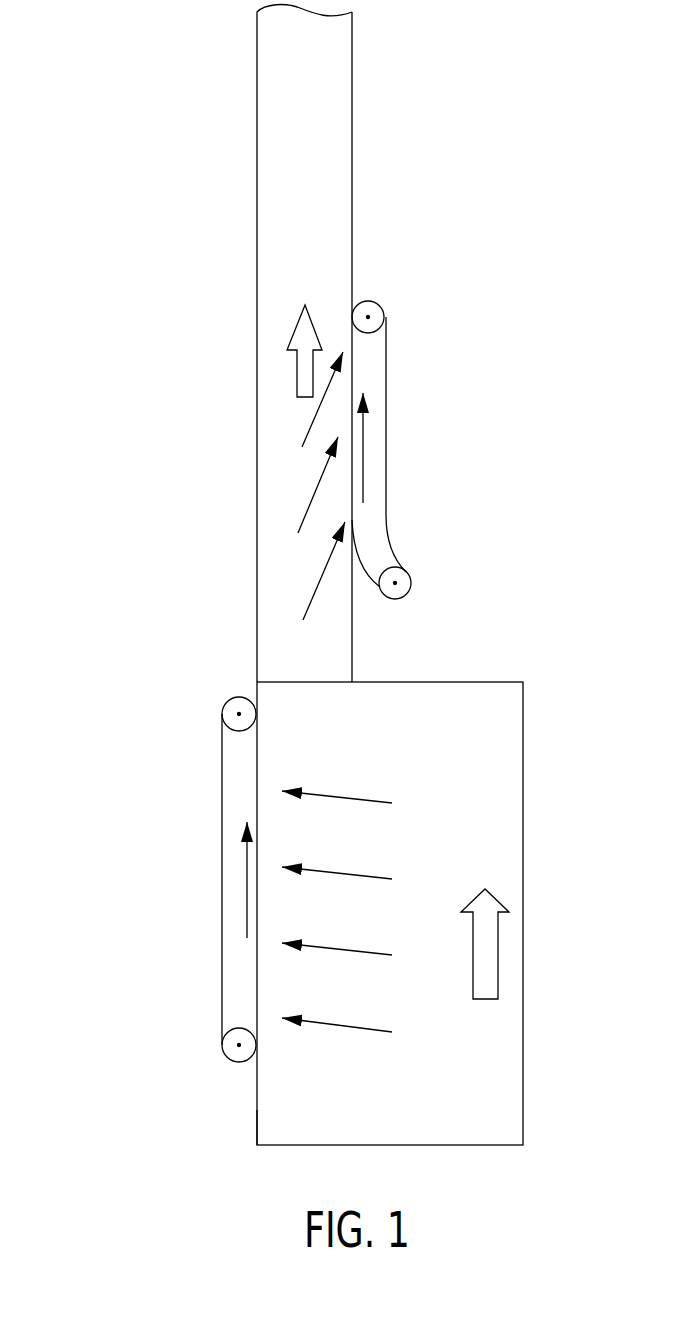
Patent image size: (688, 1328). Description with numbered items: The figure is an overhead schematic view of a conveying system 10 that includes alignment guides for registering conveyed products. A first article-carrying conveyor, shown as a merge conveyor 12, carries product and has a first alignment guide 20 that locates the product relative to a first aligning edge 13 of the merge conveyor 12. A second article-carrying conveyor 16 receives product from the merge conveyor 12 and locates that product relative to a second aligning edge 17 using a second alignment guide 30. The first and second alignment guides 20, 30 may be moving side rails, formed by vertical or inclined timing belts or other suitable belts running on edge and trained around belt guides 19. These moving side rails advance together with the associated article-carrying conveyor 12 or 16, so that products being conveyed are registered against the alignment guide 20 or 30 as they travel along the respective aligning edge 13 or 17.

The conveying system 10 is at (120, 97).
The merge conveyor 12 is at (480, 833).
The first aligning edge 13 is at (266, 1127).
The second article-carrying conveyor 16 is at (275, 650).
The second aligning edge 17 is at (352, 617).
The belt guides 19 is at (372, 320).
The first alignment guide 20 is at (229, 868).
The second alignment guide 30 is at (387, 420).